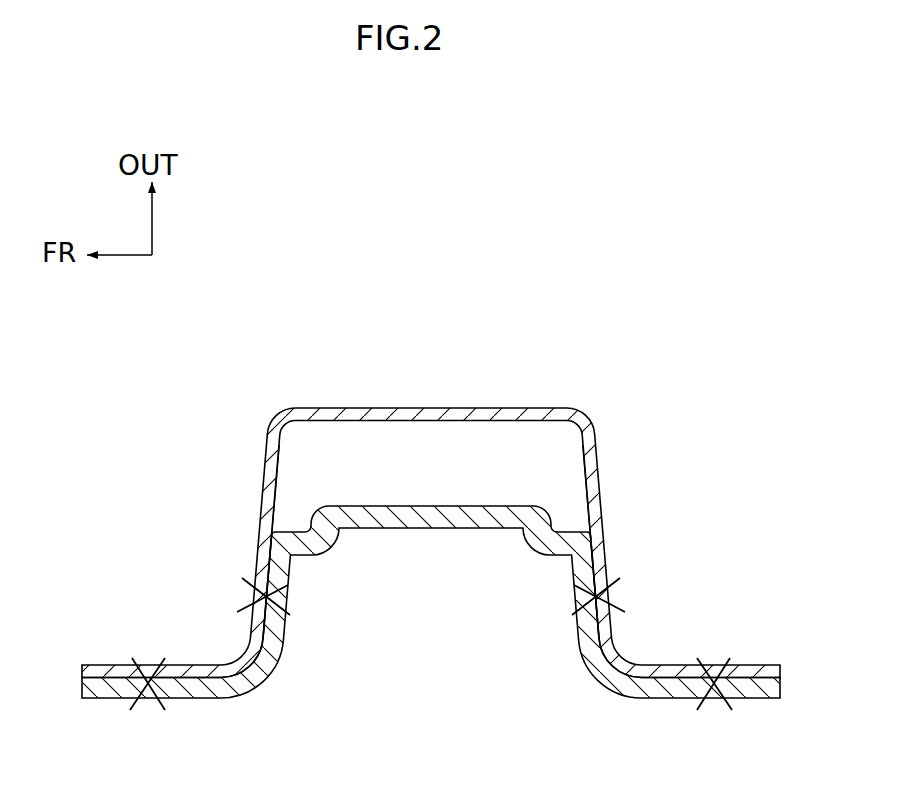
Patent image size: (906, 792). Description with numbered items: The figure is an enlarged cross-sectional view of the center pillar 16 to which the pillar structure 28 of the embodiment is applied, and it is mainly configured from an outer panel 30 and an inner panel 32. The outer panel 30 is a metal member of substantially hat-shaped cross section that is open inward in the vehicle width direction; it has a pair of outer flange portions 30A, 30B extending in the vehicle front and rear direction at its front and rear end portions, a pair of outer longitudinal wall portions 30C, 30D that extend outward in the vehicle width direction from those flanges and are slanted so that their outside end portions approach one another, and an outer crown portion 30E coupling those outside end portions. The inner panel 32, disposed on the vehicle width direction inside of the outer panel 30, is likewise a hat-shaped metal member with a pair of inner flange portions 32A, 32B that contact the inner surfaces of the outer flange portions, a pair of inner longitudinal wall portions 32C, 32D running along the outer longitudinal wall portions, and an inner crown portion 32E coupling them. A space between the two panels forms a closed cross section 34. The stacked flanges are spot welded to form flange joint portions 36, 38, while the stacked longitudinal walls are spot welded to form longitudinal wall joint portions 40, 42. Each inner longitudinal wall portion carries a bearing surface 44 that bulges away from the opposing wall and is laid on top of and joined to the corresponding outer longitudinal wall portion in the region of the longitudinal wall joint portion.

The center pillar 16 is at (587, 303).
The pillar structure 28 is at (512, 380).
The outer panel 30 is at (448, 406).
The outer flange portion 30A is at (113, 664).
The outer flange portion 30B is at (755, 664).
The outer longitudinal wall portion 30C is at (264, 481).
The outer longitudinal wall portion 30D is at (599, 476).
The outer crown portion 30E is at (377, 407).
The inner panel 32 is at (428, 531).
The inner flange portion 32A is at (197, 700).
The inner flange portion 32B is at (668, 700).
The inner longitudinal wall portion 32C is at (280, 572).
The inner longitudinal wall portion 32D is at (582, 572).
The inner crown portion 32E is at (375, 505).
The closed cross section 34 is at (448, 478).
The flange joint portion 36 is at (148, 700).
The flange joint portion 38 is at (715, 700).
The longitudinal wall joint portion 40 is at (284, 597).
The longitudinal wall joint portion 42 is at (620, 594).
The bearing surface 44 is at (276, 637).